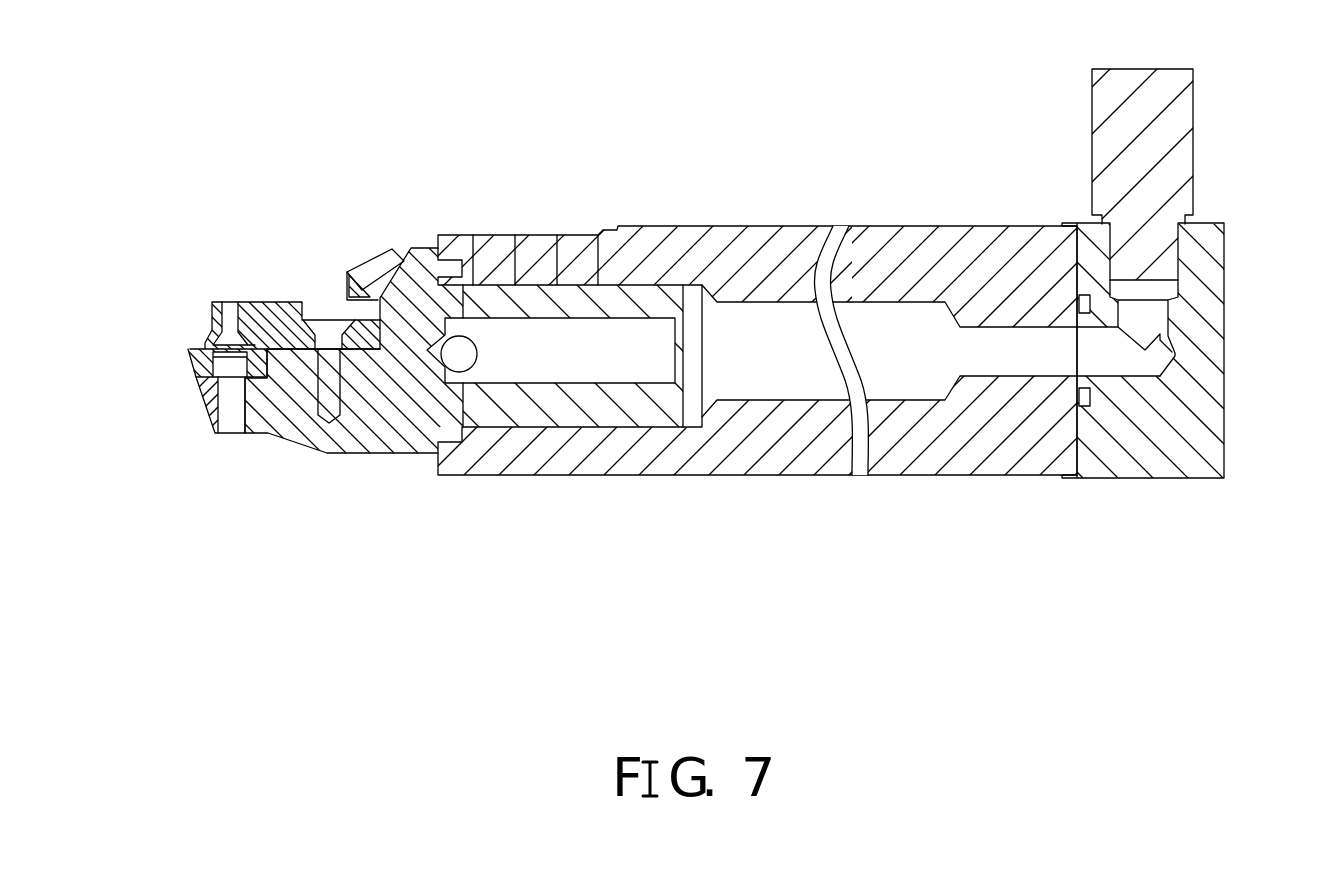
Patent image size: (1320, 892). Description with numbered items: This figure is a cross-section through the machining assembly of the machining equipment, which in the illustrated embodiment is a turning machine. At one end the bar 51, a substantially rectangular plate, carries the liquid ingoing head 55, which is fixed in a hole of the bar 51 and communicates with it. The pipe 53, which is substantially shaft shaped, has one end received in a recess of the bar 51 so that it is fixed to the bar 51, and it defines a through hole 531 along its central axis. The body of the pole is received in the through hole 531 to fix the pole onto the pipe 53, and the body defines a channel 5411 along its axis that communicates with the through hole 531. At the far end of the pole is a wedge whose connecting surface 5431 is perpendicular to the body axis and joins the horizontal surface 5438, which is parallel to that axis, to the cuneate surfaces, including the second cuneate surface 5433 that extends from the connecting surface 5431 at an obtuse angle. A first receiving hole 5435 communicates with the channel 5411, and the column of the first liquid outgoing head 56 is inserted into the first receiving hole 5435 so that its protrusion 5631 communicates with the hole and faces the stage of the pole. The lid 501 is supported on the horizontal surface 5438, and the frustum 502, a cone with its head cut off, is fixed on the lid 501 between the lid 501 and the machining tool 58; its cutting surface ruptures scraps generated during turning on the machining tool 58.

The bar 51 is at (1192, 357).
The pipe 53 is at (990, 267).
The liquid ingoing head 55 is at (1173, 128).
The through hole 531 is at (795, 352).
The channel 5411 is at (627, 353).
The first receiving hole 5435 is at (458, 353).
The second cuneate surface 5433 is at (397, 260).
The first liquid outgoing head 56 is at (360, 280).
The protrusion 5631 is at (346, 294).
The connecting surface 5431 is at (372, 321).
The lid 501 is at (211, 304).
The frustum 502 is at (195, 348).
The machining tool 58 is at (197, 377).
The horizontal surface 5438 is at (292, 352).